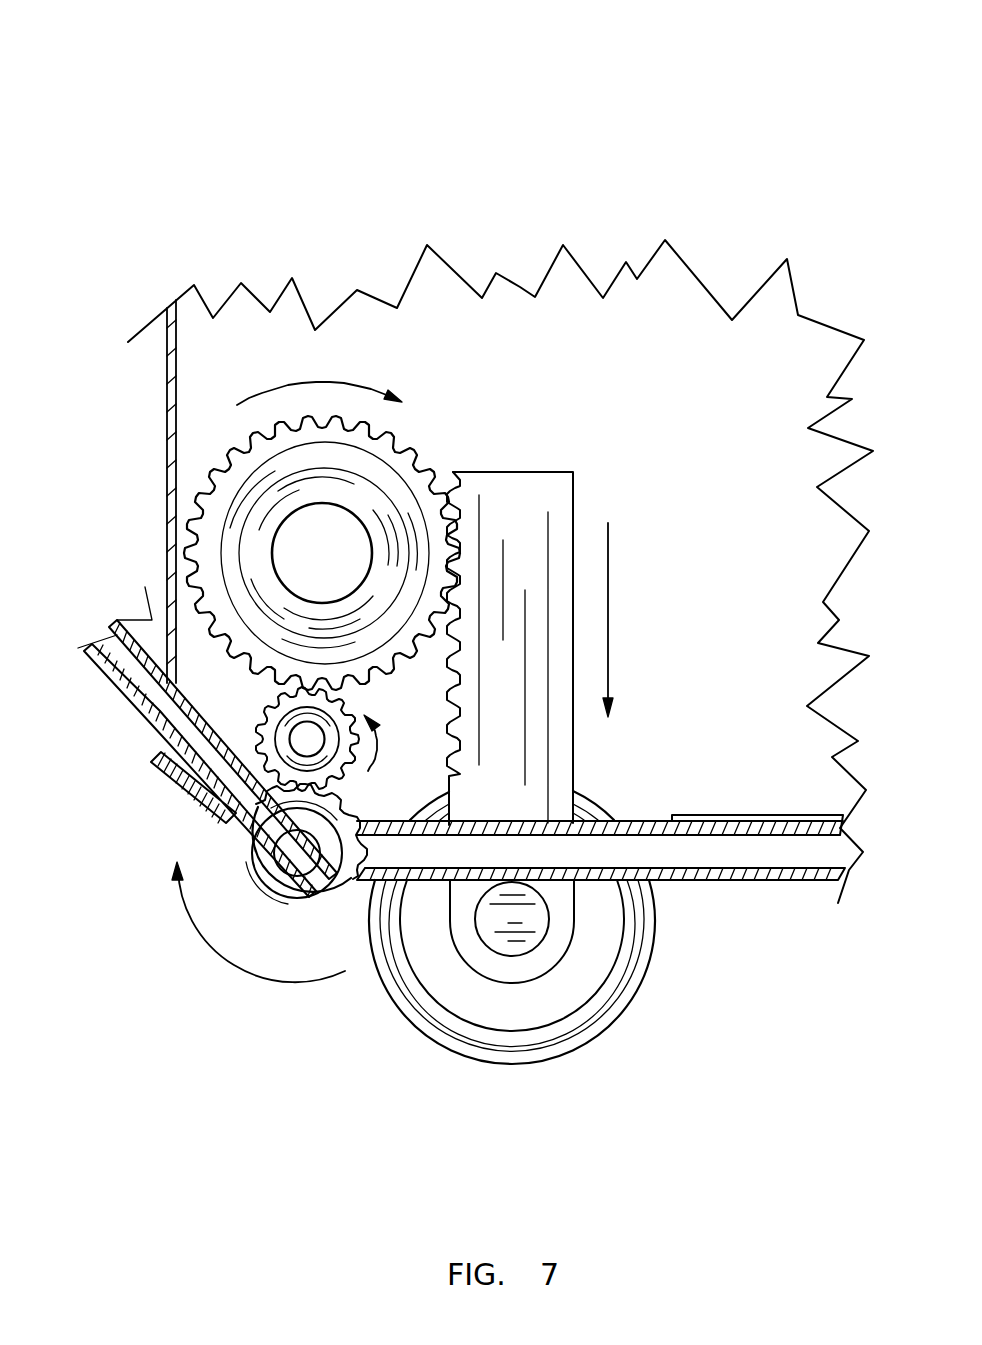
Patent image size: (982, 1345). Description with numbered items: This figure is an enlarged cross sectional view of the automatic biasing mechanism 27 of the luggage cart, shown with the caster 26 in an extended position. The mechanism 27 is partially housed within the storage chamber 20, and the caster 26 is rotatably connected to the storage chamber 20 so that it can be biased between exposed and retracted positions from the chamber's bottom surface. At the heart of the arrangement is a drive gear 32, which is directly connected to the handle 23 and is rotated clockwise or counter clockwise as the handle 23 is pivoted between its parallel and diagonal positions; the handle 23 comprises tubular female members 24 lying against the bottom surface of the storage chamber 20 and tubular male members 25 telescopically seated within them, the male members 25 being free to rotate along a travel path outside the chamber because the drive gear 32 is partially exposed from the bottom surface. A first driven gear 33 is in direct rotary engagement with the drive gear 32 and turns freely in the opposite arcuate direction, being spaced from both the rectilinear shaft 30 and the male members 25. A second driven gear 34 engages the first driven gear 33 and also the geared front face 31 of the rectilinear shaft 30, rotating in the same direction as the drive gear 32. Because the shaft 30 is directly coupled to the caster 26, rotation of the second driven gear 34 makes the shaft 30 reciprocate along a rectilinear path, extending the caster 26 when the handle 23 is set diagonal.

The storage chamber 20 is at (167, 365).
The handle 23 is at (722, 885).
The tubular female members 24 is at (787, 881).
The tubular male members 25 is at (125, 687).
The caster 26 is at (584, 812).
The automatic biasing mechanism 27 is at (137, 187).
The rectilinear shaft 30 is at (548, 512).
The geared front face 31 is at (458, 474).
The drive gear 32 is at (288, 897).
The first driven gear 33 is at (280, 717).
The second driven gear 34 is at (370, 462).